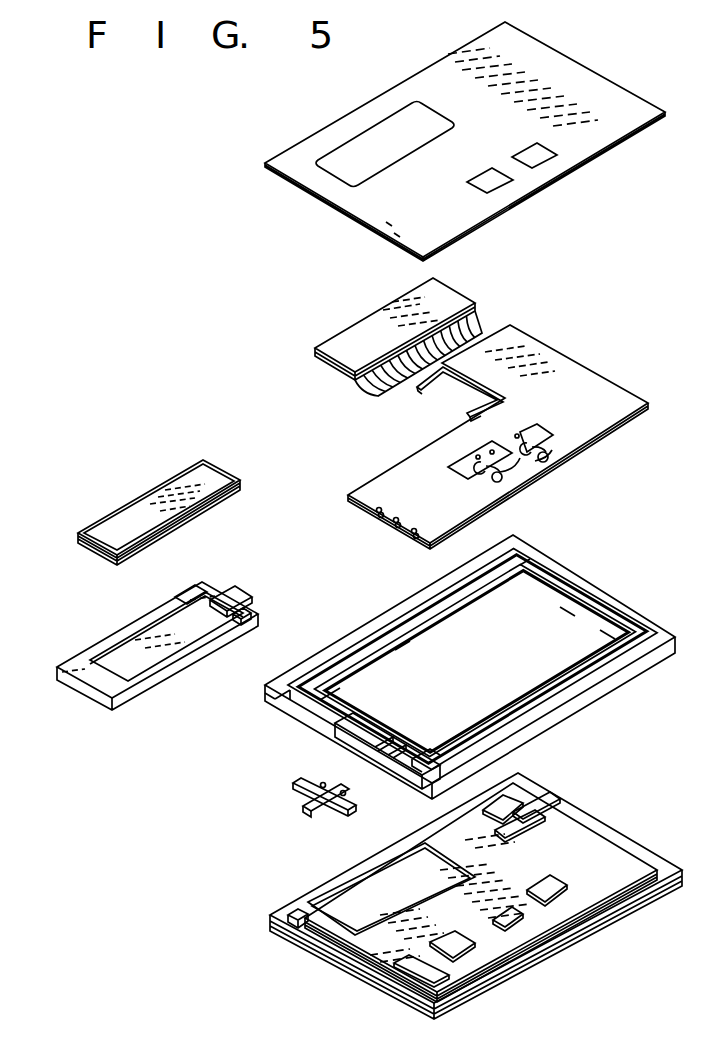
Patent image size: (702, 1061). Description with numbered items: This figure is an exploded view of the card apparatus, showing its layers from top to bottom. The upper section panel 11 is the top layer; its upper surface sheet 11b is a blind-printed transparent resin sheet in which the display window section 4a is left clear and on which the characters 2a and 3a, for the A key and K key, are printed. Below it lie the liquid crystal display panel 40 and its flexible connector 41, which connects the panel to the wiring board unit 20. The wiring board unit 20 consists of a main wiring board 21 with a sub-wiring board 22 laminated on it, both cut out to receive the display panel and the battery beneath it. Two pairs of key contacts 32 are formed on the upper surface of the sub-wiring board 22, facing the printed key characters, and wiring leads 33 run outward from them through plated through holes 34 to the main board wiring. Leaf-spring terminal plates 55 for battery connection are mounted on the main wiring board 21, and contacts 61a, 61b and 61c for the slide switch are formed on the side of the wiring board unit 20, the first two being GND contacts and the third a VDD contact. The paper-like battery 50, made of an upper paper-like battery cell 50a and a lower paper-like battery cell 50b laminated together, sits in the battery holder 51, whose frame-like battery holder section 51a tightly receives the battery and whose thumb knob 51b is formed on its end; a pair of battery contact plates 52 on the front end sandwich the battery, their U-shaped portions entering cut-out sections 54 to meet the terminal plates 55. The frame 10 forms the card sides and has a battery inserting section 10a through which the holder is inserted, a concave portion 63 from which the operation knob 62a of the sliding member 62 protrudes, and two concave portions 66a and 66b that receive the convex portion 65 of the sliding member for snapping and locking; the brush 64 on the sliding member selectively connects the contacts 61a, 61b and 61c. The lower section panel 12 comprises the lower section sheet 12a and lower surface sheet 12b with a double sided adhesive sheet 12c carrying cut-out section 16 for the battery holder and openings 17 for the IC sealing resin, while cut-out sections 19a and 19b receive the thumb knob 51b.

The upper section panel 11 is at (588, 62).
The upper surface sheet 11b is at (425, 75).
The display window section 4a is at (343, 157).
The character "A" 2a is at (482, 190).
The character "K" 3a is at (540, 164).
The liquid crystal display panel 40 is at (348, 340).
The flexible connector 41 is at (480, 336).
The wiring board unit 20 is at (481, 452).
The main wiring board 21 is at (612, 433).
The sub-wiring board 22 is at (612, 398).
The terminal plates for battery connection 55 is at (470, 400).
The key contacts 32 is at (502, 480).
The wiring leads 33 is at (448, 470).
The through holes 34 is at (492, 450).
The GND contact 61a is at (414, 538).
The GND contact 61b is at (396, 527).
The VDD contact 61c is at (378, 514).
The paper-like battery 50 is at (138, 492).
The upper paper-like battery cell 50a is at (93, 520).
The lower paper-like battery cell 50b is at (108, 560).
The battery holder 51 is at (141, 697).
The battery holder section 51a is at (172, 655).
The thumb knob 51b is at (72, 676).
The battery contact plates 52 is at (180, 598).
The cut-out sections 54 is at (248, 622).
The frame 10 is at (617, 600).
The battery inserting section 10a is at (306, 712).
The concave portion 63 is at (412, 758).
The concave portion 66a is at (376, 730).
The concave portion 66b is at (394, 745).
The sliding member 62 is at (345, 810).
The operation knob 62a is at (304, 810).
The brush 64 is at (326, 782).
The convex portion 65 is at (293, 786).
The lower section panel 12 is at (462, 902).
The lower section sheet 12a is at (345, 955).
The lower surface sheet 12b is at (395, 995).
The double sided adhesive sheet 12c is at (585, 840).
The cut-out section 16 is at (298, 908).
The openings 17 is at (515, 800).
The cut-out section 19a is at (312, 937).
The cut-out section 19b is at (318, 946).